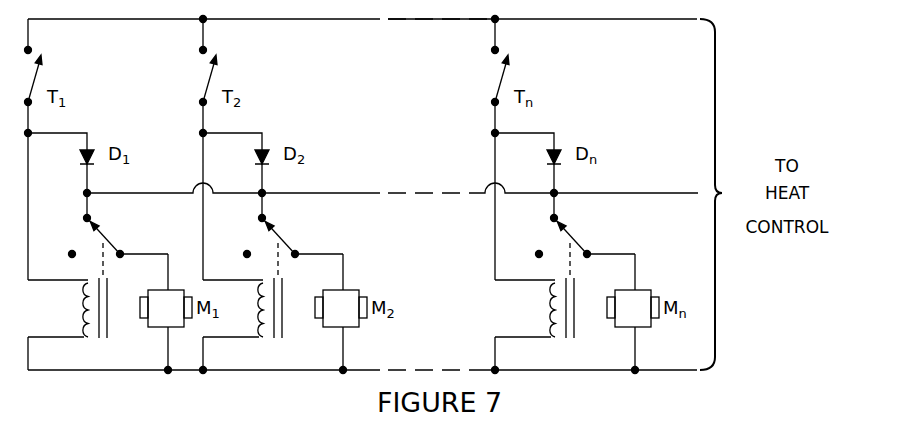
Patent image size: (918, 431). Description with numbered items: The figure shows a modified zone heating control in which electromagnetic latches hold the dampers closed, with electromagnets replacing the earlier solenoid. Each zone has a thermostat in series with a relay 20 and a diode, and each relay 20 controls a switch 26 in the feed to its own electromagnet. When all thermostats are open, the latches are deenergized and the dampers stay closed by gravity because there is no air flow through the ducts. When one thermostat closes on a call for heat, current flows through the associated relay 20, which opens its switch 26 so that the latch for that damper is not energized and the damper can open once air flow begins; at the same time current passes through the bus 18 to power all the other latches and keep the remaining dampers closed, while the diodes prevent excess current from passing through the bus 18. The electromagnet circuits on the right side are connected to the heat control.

The bus 18 is at (350, 193).
The relay 20 is at (56, 337).
The switch 26 is at (93, 255).